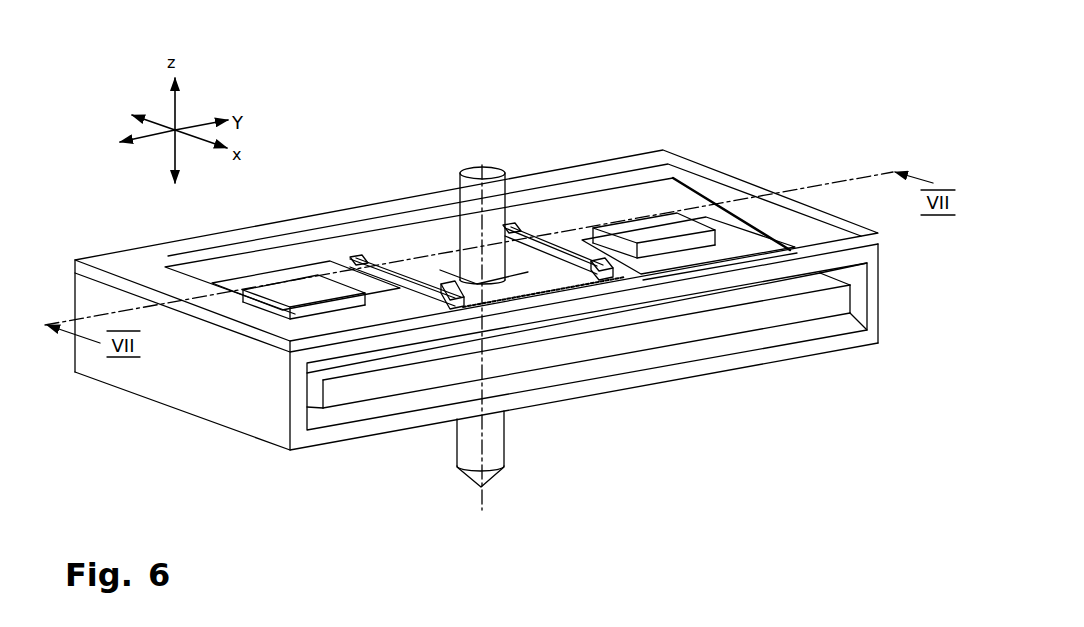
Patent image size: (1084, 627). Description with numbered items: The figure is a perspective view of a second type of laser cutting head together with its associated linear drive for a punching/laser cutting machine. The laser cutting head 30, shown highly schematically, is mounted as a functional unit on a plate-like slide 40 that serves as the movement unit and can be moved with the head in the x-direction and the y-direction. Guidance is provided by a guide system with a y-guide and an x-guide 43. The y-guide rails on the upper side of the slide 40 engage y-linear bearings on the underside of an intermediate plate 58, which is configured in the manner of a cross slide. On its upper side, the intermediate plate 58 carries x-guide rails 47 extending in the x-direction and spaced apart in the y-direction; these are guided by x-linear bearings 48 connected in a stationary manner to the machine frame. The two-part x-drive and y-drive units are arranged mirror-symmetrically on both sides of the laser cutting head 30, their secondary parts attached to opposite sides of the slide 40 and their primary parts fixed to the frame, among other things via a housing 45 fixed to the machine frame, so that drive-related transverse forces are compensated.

The laser cutting head 30 is at (522, 448).
The slide 40 is at (680, 332).
The x-guide 43 is at (428, 268).
The housing 45 is at (250, 403).
The x-guide rails 47 is at (460, 300).
The x-linear bearings 48 is at (397, 275).
The intermediate plate 58 is at (542, 275).